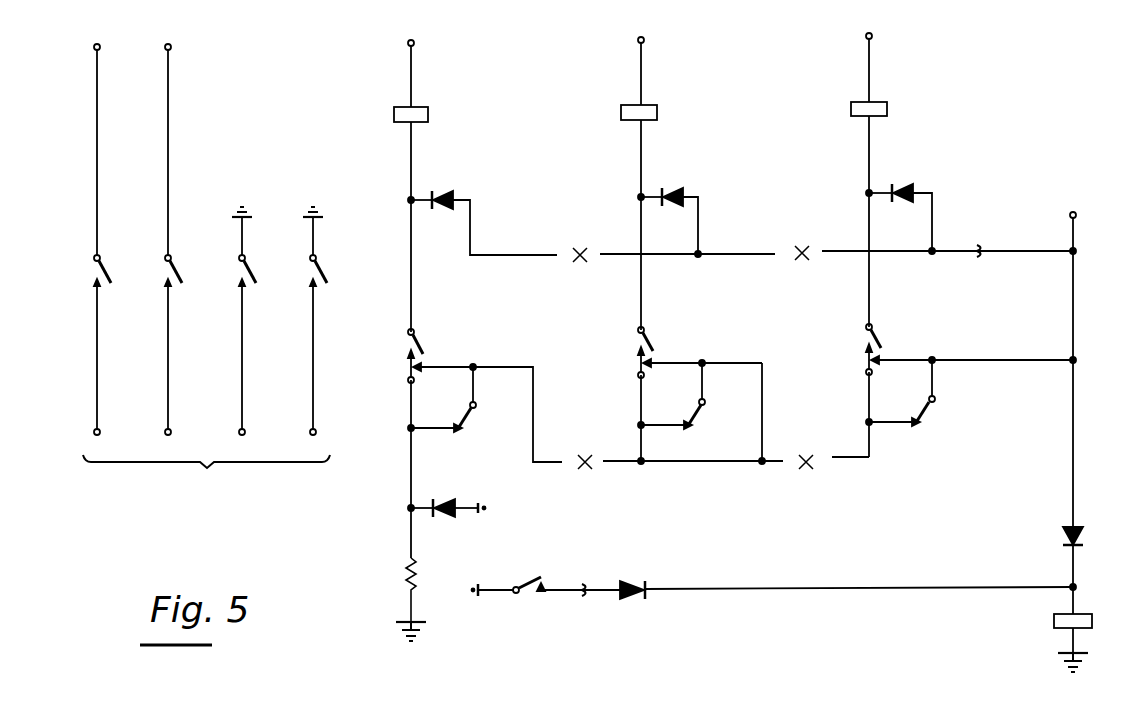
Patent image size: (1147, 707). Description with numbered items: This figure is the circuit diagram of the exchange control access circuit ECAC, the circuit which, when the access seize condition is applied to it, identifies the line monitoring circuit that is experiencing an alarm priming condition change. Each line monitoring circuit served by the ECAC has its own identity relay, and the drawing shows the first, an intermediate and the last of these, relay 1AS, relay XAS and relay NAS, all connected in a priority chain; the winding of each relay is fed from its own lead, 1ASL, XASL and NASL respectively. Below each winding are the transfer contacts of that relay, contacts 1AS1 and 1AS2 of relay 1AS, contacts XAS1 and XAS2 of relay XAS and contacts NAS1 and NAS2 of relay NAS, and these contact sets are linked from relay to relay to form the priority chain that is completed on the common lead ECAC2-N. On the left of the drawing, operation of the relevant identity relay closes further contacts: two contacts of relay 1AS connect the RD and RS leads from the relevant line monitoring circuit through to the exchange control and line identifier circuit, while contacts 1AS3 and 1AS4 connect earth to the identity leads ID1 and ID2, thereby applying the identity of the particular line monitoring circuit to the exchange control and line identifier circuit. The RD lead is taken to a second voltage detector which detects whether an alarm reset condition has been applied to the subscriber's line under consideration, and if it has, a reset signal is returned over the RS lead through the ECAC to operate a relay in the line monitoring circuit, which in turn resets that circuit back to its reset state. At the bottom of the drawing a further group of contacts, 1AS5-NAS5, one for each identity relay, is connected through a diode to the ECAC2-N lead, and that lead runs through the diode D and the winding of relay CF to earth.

The RD lead RD is at (97, 239).
The RS lead RS is at (167, 239).
The identity lead ID1 is at (242, 333).
The identity lead ID2 is at (313, 333).
The identity relay 1AS is at (463, 123).
The relay 1AS contact 1AS3 is at (268, 270).
The relay 1AS contact 1AS4 is at (339, 270).
The access select lead 1ASL is at (728, 329).
The relay 1AS transfer contact 1AS1 is at (500, 399).
The relay 1AS contact 1AS2 is at (464, 401).
The access select lead XASL is at (708, 242).
The identity relay XAS is at (695, 121).
The relay XAS transfer contact XAS1 is at (701, 395).
The relay XAS contact XAS2 is at (694, 397).
The access select lead NASL is at (883, 234).
The identity relay NAS is at (925, 118).
The relay NAS transfer contact NAS1 is at (971, 349).
The relay NAS contact NAS2 is at (925, 394).
The exchange control access circuit lead ECAC2-N is at (1055, 358).
The diode D is at (1082, 570).
The relay CF is at (1088, 643).
The relay contacts 1AS5 through NAS5 1AS5-NAS5 is at (773, 578).
The exchange control access circuit ECAC is at (783, 550).